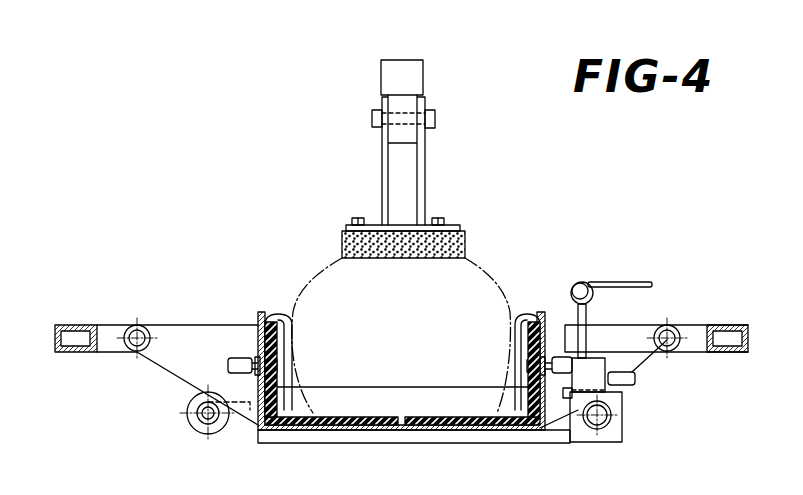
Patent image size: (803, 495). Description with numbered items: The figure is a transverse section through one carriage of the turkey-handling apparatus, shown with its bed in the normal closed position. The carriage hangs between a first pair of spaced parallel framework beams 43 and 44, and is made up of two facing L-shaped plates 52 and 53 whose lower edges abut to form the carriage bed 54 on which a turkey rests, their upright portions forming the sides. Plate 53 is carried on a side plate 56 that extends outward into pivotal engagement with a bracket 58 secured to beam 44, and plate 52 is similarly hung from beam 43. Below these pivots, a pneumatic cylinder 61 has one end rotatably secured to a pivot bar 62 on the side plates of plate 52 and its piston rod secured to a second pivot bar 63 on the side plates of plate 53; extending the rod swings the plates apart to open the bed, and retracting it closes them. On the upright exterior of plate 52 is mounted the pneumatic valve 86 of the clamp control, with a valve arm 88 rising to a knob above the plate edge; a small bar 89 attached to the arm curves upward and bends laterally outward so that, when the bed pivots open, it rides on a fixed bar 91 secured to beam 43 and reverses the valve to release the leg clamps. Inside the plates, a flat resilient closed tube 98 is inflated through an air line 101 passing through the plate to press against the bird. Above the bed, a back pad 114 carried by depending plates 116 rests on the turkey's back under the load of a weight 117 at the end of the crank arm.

The framework beam 43 is at (748, 325).
The framework beam 44 is at (60, 325).
The L-shaped carriage plate 52 is at (448, 427).
The L-shaped carriage plate 53 is at (258, 322).
The carriage bed 54 is at (416, 387).
The side plate 56 is at (186, 325).
The bracket 58 is at (128, 325).
The pneumatic cylinder 61 is at (325, 431).
The pivot bar 62 is at (597, 440).
The pivot bar 63 is at (197, 426).
The pneumatic valve 86 is at (608, 407).
The valve arm 88 is at (585, 284).
The small bar 89 is at (648, 282).
The fixed bar 91 is at (618, 329).
The resilient closed tube 98 is at (284, 316).
The air line 101 is at (232, 362).
The back pad 114 is at (462, 236).
The depending plates 116 is at (382, 172).
The weight 117 is at (410, 60).